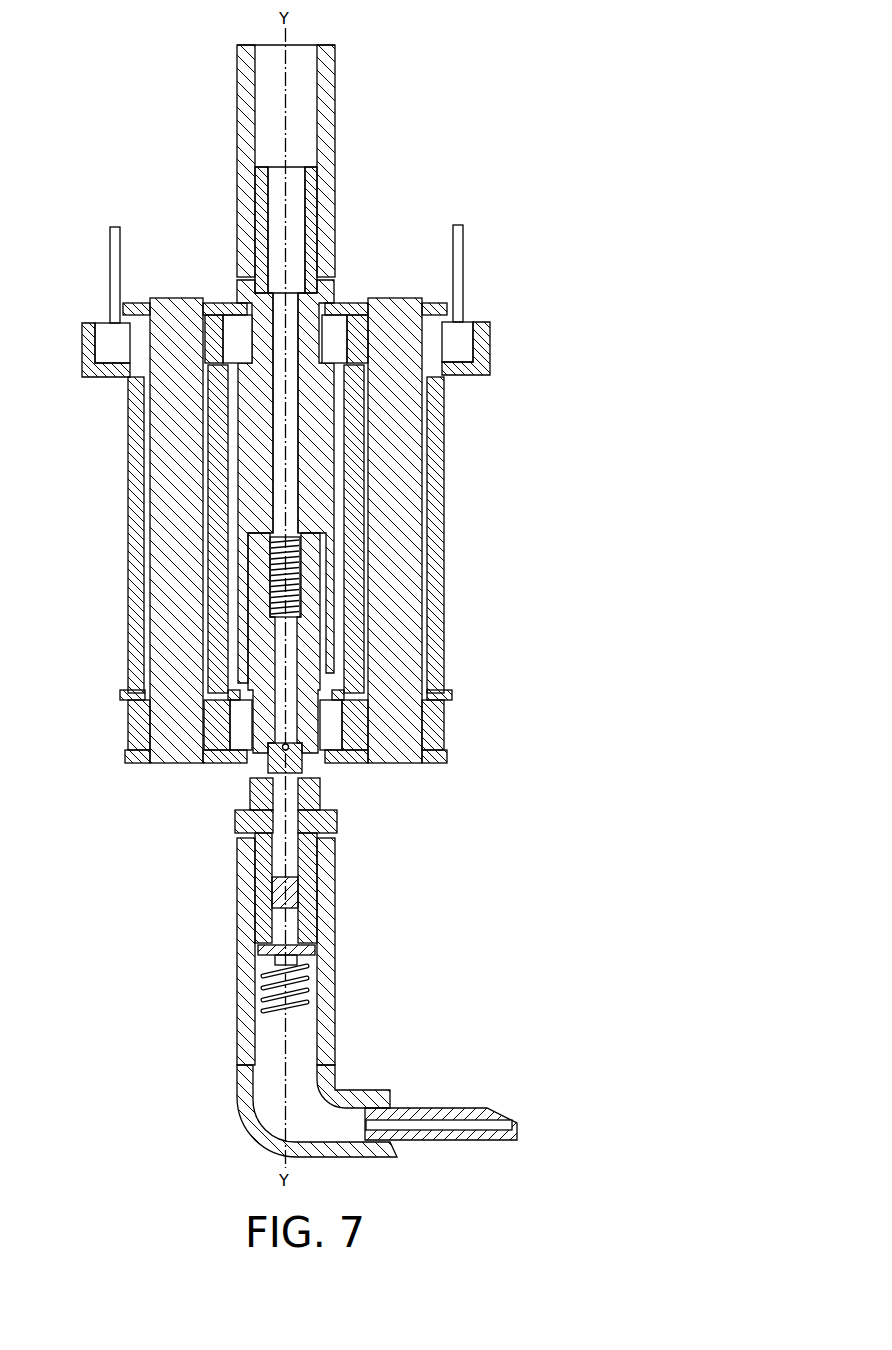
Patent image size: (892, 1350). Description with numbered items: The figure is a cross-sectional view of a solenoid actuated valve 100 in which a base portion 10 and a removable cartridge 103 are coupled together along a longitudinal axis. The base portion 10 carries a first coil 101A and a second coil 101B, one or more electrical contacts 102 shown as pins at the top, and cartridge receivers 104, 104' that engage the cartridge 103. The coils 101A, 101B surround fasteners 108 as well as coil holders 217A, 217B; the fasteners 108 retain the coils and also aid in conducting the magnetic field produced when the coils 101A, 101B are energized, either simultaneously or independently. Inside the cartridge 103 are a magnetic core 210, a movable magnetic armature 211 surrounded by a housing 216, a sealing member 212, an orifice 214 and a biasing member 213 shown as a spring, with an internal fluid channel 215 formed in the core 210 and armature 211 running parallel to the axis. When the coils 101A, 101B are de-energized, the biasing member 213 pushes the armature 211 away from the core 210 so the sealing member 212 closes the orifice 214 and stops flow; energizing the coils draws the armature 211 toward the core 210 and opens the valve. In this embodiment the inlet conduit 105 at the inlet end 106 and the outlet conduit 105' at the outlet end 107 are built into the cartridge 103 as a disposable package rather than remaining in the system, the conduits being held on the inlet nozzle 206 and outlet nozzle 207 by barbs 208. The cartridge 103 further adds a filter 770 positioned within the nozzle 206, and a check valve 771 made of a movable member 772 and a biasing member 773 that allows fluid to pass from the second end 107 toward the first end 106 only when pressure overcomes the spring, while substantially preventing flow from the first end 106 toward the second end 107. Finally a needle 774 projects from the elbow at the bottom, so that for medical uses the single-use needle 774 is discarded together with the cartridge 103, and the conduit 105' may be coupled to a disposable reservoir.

The valve 100 is at (533, 108).
The base portion 10 is at (465, 775).
The first coil 101A is at (148, 530).
The second coil 101B is at (430, 519).
The electrical contacts 102 is at (112, 232).
The removable cartridge 103 is at (358, 489).
The cartridge receiver 104 is at (301, 756).
The cartridge receiver 104' is at (317, 315).
The inlet conduit 105 is at (287, 1111).
The outlet conduit 105' is at (318, 161).
The inlet end 106 is at (418, 1156).
The outlet end 107 is at (322, 36).
The fasteners 108 is at (184, 306).
The inlet nozzle 206 is at (252, 886).
The outlet nozzle 207 is at (306, 227).
The barbs 208 is at (315, 190).
The magnetic core 210 is at (326, 444).
The movable magnetic armature 211 is at (331, 638).
The sealing member 212 is at (282, 754).
The biasing member 213 is at (302, 574).
The orifice 214 is at (280, 790).
The internal fluid channel 215 is at (290, 412).
The housing 216 is at (258, 708).
The coil holder 217A is at (125, 694).
The coil holder 217B is at (452, 696).
The filter 770 is at (290, 884).
The check valve 771 is at (325, 978).
The movable member 772 is at (310, 948).
The biasing member 773 is at (298, 1003).
The needle 774 is at (480, 1110).